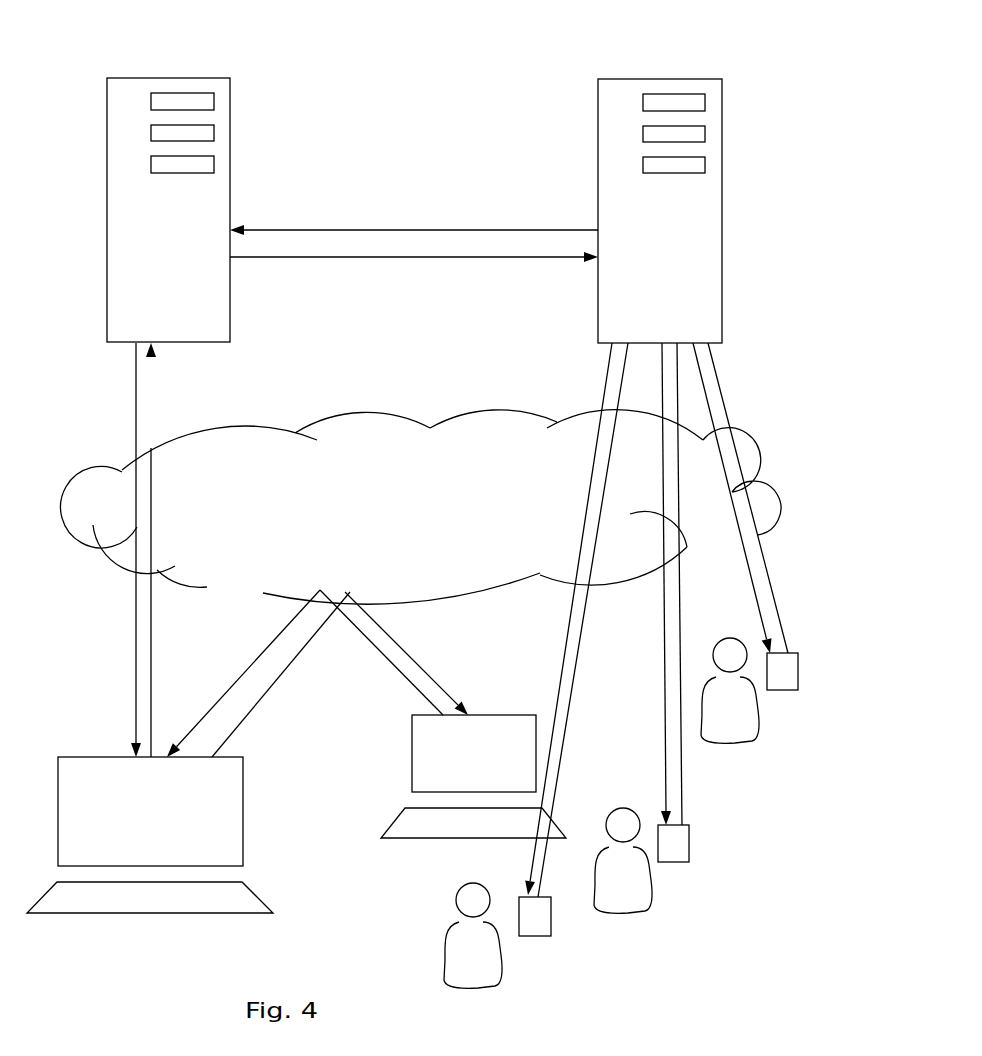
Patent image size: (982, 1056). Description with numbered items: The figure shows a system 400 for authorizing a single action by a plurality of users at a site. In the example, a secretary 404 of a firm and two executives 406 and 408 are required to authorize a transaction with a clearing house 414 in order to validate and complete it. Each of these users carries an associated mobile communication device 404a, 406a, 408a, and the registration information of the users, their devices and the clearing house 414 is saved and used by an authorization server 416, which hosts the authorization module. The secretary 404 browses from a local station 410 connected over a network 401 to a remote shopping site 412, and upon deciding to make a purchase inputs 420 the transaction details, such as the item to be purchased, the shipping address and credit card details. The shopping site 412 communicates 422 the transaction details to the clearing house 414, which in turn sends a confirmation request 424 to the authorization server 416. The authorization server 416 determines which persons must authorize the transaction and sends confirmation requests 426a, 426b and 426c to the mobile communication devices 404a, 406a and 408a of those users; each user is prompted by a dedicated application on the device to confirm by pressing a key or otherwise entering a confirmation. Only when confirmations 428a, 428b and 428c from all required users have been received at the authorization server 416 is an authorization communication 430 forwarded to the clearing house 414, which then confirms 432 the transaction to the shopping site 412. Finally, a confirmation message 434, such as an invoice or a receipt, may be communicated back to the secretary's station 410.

The system 400 is at (413, 72).
The network 401 is at (403, 517).
The secretary 404 is at (460, 925).
The mobile communication device 404a is at (535, 940).
The executive 406 is at (625, 910).
The mobile communication device 406a is at (675, 863).
The executive 408 is at (728, 740).
The mobile communication device 408a is at (782, 690).
The local station 410 is at (491, 764).
The shopping site 412 is at (171, 834).
The clearing house 414 is at (191, 276).
The authorization server 416 is at (677, 276).
The input of transaction details 420 is at (233, 687).
The communication of transaction details 422 is at (151, 629).
The confirmation request 424 is at (332, 257).
The confirmation request 426a is at (560, 672).
The confirmation request 426b is at (664, 755).
The confirmation request 426c is at (746, 562).
The confirmation 428a is at (570, 712).
The confirmation 428b is at (679, 667).
The confirmation 428c is at (777, 600).
The authorization communication 430 is at (337, 230).
The transaction confirmation 432 is at (135, 673).
The confirmation message 434 is at (418, 665).